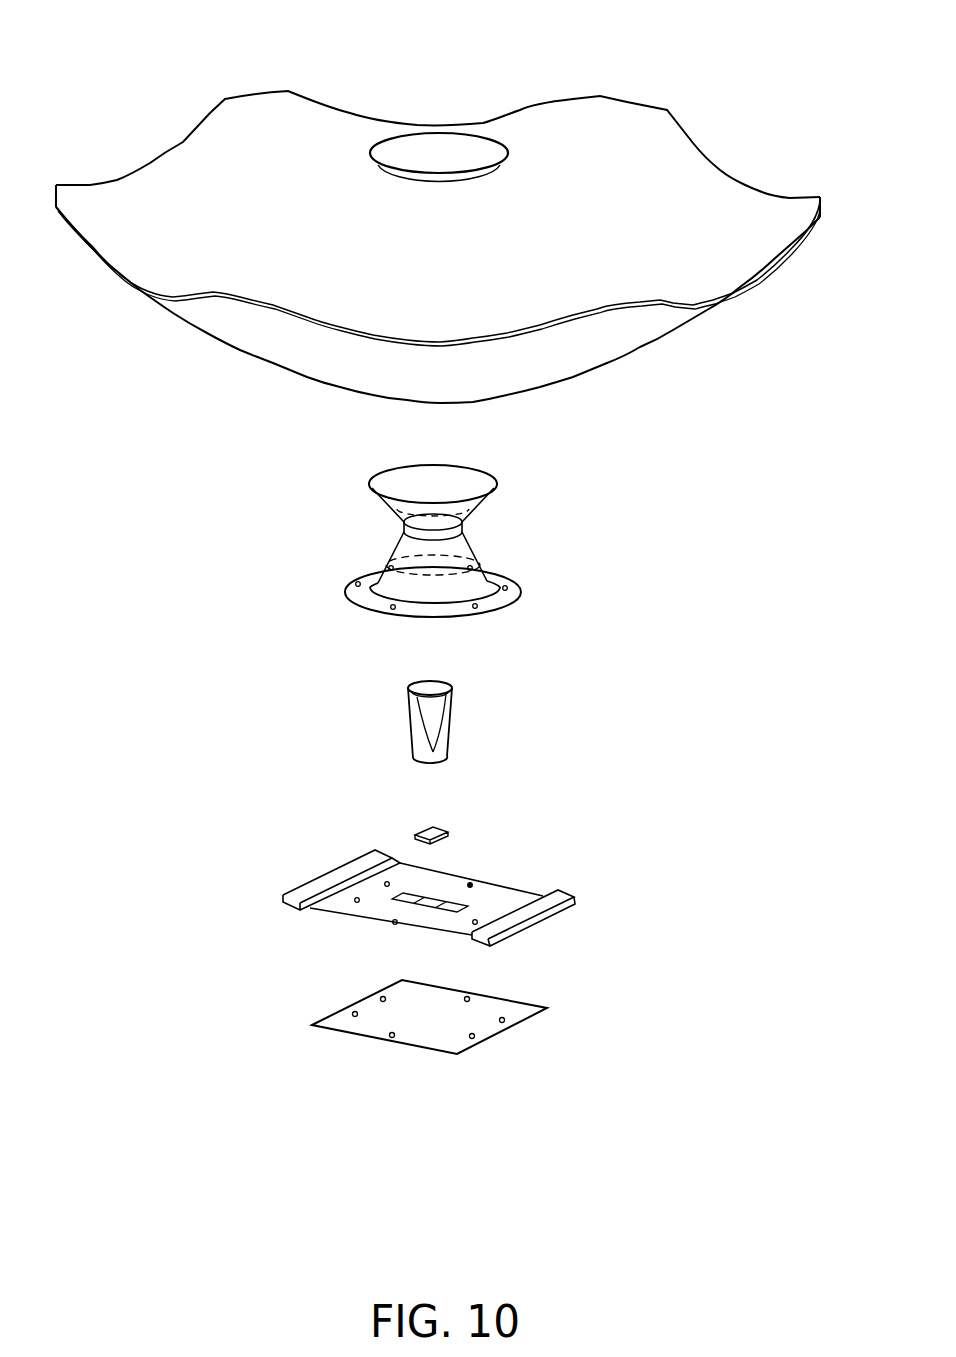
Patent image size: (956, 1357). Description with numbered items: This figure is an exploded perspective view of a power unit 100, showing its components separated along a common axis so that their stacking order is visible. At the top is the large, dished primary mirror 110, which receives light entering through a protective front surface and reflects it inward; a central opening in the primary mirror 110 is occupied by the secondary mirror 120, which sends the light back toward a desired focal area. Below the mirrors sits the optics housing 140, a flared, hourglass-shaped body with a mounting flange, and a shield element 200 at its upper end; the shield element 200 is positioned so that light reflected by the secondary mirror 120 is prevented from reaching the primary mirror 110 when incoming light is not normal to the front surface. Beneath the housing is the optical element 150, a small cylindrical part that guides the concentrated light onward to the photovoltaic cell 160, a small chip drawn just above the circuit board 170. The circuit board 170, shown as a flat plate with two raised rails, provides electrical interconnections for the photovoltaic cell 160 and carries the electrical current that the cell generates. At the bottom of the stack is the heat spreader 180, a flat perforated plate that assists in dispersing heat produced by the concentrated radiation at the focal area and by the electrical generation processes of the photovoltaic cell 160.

The power unit 100 is at (185, 48).
The primary mirror 110 is at (693, 142).
The secondary mirror 120 is at (428, 184).
The optics housing 140 is at (434, 525).
The shield element 200 is at (472, 470).
The optical element 150 is at (443, 730).
The photovoltaic cell 160 is at (434, 829).
The circuit board 170 is at (562, 888).
The heat spreader 180 is at (338, 1018).